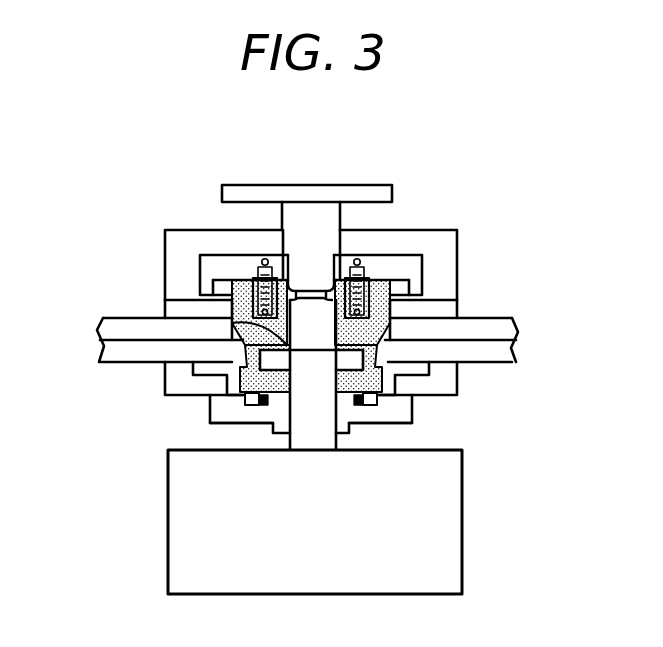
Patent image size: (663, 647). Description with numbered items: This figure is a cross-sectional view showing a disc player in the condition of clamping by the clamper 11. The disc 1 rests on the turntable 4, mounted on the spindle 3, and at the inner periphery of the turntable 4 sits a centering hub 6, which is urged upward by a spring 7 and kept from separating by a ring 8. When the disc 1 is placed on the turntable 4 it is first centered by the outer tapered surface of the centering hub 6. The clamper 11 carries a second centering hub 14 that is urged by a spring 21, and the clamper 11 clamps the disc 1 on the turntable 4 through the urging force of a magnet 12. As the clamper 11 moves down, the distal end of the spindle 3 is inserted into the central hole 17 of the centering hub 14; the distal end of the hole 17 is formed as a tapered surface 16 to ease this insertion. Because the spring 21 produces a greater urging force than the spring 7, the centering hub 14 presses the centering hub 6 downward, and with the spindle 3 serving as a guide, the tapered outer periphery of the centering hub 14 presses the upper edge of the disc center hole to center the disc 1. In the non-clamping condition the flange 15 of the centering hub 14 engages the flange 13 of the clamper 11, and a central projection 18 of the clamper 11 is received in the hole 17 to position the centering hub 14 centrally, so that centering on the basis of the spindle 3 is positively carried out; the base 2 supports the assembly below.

The disc 1 is at (492, 330).
The base 2 is at (450, 550).
The spindle 3 is at (305, 446).
The turntable 4 is at (447, 377).
The centering hub 6 is at (230, 393).
The spring 7 is at (250, 400).
The ring 8 is at (313, 357).
The clamper 11 is at (320, 196).
The magnet 12 is at (170, 300).
The flange 13 is at (208, 293).
The centering hub 14 is at (363, 337).
The flange 15 is at (387, 280).
The tapered surface 16 is at (235, 328).
The central hole 17 is at (330, 289).
The central projection 18 is at (303, 265).
The spring 21 is at (257, 267).